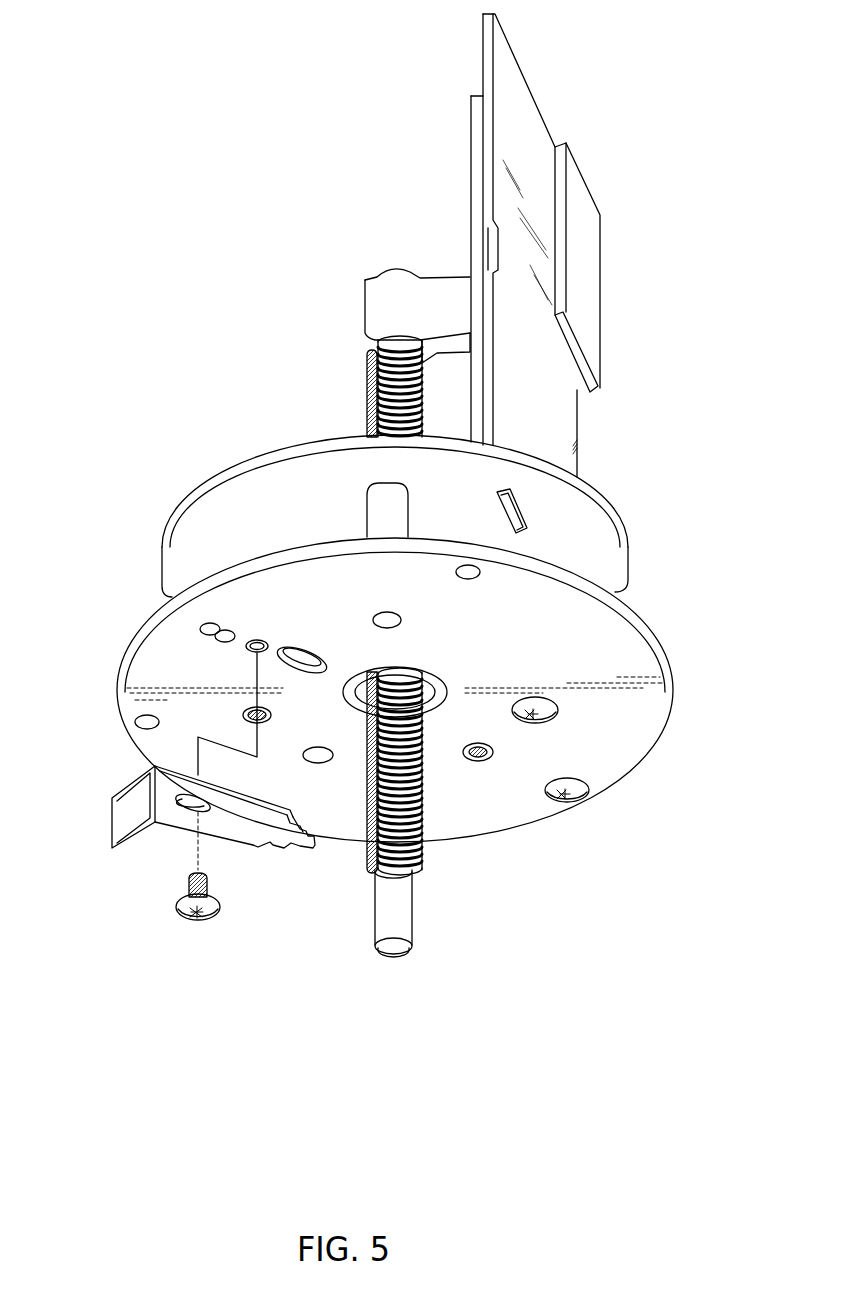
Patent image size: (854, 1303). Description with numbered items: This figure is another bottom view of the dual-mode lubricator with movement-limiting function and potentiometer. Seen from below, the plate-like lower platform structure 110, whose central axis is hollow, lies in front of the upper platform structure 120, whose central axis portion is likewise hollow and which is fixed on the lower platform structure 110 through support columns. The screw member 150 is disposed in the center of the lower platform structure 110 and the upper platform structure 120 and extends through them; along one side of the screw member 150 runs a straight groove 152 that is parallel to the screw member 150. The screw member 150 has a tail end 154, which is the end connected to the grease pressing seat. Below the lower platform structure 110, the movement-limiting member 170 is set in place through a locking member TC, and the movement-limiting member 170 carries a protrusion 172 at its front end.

The lower platform structure 110 is at (625, 657).
The upper platform structure 120 is at (603, 545).
The screw member 150 is at (422, 863).
The straight groove 152 is at (367, 873).
The tail end 154 is at (392, 910).
The movement-limiting member 170 is at (130, 810).
The protrusion 172 is at (300, 853).
The locking member TC is at (182, 905).